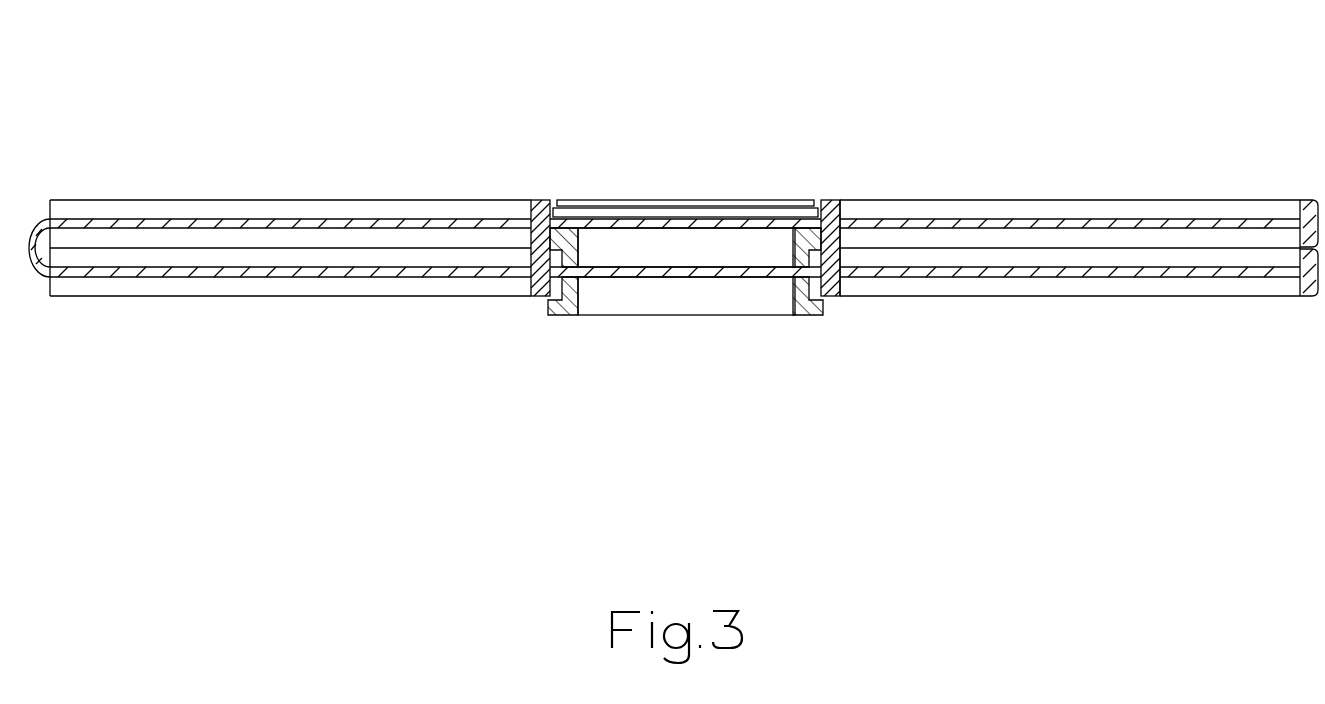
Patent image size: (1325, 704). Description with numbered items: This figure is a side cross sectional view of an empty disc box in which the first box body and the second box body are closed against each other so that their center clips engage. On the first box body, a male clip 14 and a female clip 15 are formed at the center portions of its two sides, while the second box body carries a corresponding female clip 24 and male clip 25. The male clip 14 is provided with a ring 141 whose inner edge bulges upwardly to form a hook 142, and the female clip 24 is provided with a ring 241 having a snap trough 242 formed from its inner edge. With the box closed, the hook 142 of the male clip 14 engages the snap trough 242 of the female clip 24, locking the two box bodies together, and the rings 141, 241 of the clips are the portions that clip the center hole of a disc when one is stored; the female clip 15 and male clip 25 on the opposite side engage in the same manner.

The male clip 14 is at (794, 226).
The ring 141 is at (531, 237).
The hook 142 is at (557, 275).
The female clip 15 is at (541, 200).
The female clip 24 is at (832, 250).
The ring 241 is at (531, 259).
The snap trough 242 is at (807, 247).
The male clip 25 is at (832, 298).